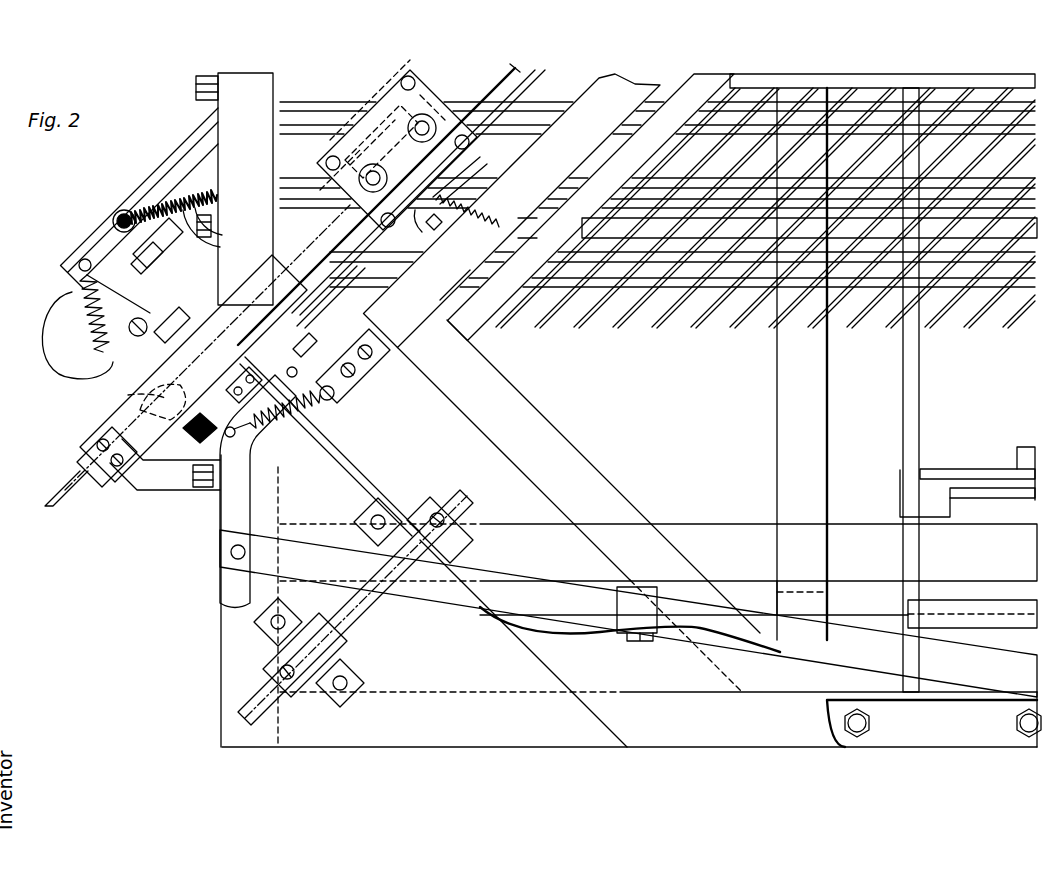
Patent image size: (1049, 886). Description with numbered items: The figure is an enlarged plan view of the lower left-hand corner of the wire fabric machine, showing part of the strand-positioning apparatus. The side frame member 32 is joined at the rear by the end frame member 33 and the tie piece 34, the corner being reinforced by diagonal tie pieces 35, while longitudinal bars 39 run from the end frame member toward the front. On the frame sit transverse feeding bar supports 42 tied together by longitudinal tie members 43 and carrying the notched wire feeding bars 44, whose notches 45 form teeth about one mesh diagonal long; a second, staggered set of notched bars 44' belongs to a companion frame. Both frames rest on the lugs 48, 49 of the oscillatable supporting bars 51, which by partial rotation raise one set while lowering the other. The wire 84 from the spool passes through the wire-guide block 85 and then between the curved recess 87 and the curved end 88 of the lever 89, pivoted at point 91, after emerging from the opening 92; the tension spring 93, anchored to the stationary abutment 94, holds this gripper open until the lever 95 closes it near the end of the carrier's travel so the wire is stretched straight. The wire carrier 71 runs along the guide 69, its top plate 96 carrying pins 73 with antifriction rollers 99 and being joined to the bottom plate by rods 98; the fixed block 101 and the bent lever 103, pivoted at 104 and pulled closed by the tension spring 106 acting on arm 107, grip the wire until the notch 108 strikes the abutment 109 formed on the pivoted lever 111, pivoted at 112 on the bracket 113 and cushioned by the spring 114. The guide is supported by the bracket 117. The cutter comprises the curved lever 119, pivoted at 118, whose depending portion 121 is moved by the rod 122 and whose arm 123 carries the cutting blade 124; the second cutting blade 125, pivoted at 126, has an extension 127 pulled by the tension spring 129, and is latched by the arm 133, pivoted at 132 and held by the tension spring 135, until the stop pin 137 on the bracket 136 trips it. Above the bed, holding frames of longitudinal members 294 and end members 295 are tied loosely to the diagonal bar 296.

The side frame member 32 is at (682, 748).
The end frame member 33 is at (218, 151).
The tie piece 34 is at (777, 426).
The diagonal tie pieces 35 is at (578, 460).
The longitudinal bars 39 is at (722, 524).
The transverse feeding bar supports 42 is at (919, 403).
The longitudinal tie members 43 is at (970, 600).
The notched wire feeding bars 44 is at (639, 228).
The notched bars 44' is at (636, 160).
The notches 45 is at (690, 322).
The lug 48 is at (933, 505).
The lug 49 is at (1020, 448).
The oscillatable supporting bars 51 is at (993, 476).
The guide 69 is at (518, 70).
The wire carrier 71 is at (380, 110).
The pins 73 is at (436, 120).
The wire 84 is at (925, 318).
The block 85 is at (80, 453).
The curved recess 87 is at (153, 357).
The curved end 88 is at (190, 390).
The lever 89 is at (233, 413).
The pivot point 91 is at (155, 415).
The opening 92 is at (127, 395).
The tension spring 93 is at (262, 438).
The stationary abutment 94 is at (330, 400).
The lever 95 is at (463, 600).
The top plate 96 is at (395, 98).
The rods 98 is at (393, 290).
The antifriction rollers 99 is at (415, 85).
The fixed block 101 is at (335, 158).
The bent lever 103 is at (483, 197).
The pivot 104 is at (478, 254).
The tension spring 106 is at (467, 163).
The arm 107 is at (420, 213).
The notch 108 is at (350, 130).
The abutment 109 is at (218, 248).
The pivoted lever 111 is at (70, 365).
The pivot 112 is at (126, 315).
The bracket 113 is at (150, 168).
The spring 114 is at (67, 294).
The bracket 117 is at (133, 490).
The pivot 118 is at (357, 610).
The curved lever 119 is at (377, 482).
The depending portion 121 is at (572, 634).
The rod 122 is at (860, 593).
The arm 123 is at (320, 390).
The cutting blade 124 is at (205, 315).
The second cutting blade 125 is at (319, 346).
The pivot 126 is at (305, 275).
The extension 127 is at (173, 268).
The tension spring 129 is at (163, 197).
The pivot 132 is at (295, 335).
The arm 133 is at (300, 365).
The tension spring 135 is at (115, 228).
The bracket 136 is at (172, 199).
The stop pin 137 is at (148, 190).
The longitudinal members 294 is at (777, 157).
The end members 295 is at (627, 157).
The bar 296 is at (397, 348).